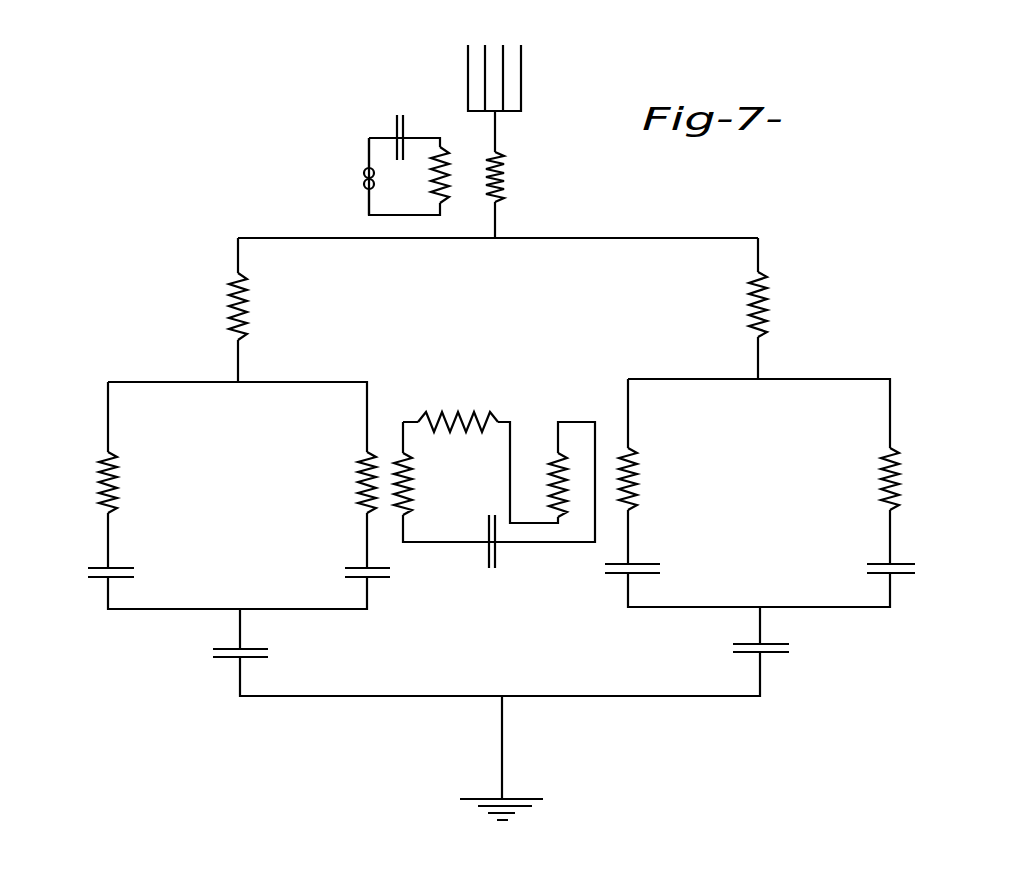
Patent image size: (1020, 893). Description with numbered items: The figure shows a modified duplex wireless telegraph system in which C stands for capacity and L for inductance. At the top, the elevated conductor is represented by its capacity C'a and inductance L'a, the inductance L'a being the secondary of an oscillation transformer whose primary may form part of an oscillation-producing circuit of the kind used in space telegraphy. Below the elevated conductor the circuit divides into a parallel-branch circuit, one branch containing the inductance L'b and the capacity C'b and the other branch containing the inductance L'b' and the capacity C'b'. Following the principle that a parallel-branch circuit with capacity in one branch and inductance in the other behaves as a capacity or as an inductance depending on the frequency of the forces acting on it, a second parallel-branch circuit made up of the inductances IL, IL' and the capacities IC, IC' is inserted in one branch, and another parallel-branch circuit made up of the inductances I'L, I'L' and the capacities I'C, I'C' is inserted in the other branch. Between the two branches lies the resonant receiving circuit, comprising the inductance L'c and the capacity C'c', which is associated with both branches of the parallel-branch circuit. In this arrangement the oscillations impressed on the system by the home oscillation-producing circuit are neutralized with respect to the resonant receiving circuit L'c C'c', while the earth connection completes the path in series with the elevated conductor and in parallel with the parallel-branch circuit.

The capacity of the elevated conductor C'a is at (528, 78).
The inductance of the elevated conductor L'a is at (520, 177).
The inductance of the first parallel branch L'b is at (266, 306).
The inductance of the second parallel branch L'b' is at (796, 304).
The inductance of the second parallel-branch circuit IL is at (133, 482).
The inductance of the second parallel-branch circuit IL' is at (329, 482).
The capacity of the second parallel-branch circuit IC is at (133, 568).
The capacity of the second parallel-branch circuit IC' is at (331, 559).
The inductance of the resonant receiving circuit L'c is at (458, 398).
The capacity of the resonant receiving circuit C'c' is at (460, 556).
The inductance of the other parallel-branch circuit I'L is at (653, 479).
The inductance of the other parallel-branch circuit I'L' is at (917, 479).
The capacity of the other parallel-branch circuit I'C is at (654, 568).
The capacity of the other parallel-branch circuit I'C' is at (919, 568).
The capacity of the first parallel branch C'b is at (266, 655).
The capacity of the second parallel branch C'b' is at (792, 650).